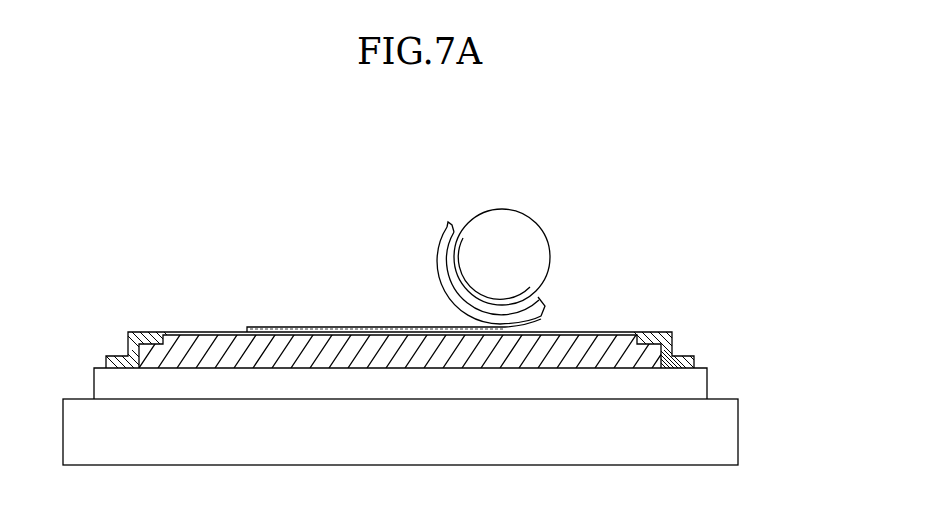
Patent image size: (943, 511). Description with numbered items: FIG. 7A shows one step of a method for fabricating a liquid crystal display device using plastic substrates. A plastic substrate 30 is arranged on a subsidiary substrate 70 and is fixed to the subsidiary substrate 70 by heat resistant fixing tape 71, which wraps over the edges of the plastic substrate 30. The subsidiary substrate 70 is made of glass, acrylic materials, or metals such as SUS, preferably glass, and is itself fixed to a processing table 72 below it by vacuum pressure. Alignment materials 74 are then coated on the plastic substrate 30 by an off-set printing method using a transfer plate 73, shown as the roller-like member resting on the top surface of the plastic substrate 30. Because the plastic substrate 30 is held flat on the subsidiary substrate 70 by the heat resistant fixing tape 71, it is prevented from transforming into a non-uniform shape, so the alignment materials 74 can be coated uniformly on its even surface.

The plastic substrate 30 is at (628, 332).
The subsidiary substrate 70 is at (695, 384).
The heat resistant fixing tape 71 is at (665, 342).
The processing table 72 is at (727, 428).
The transfer plate 73 is at (543, 301).
The alignment materials 74 is at (541, 322).